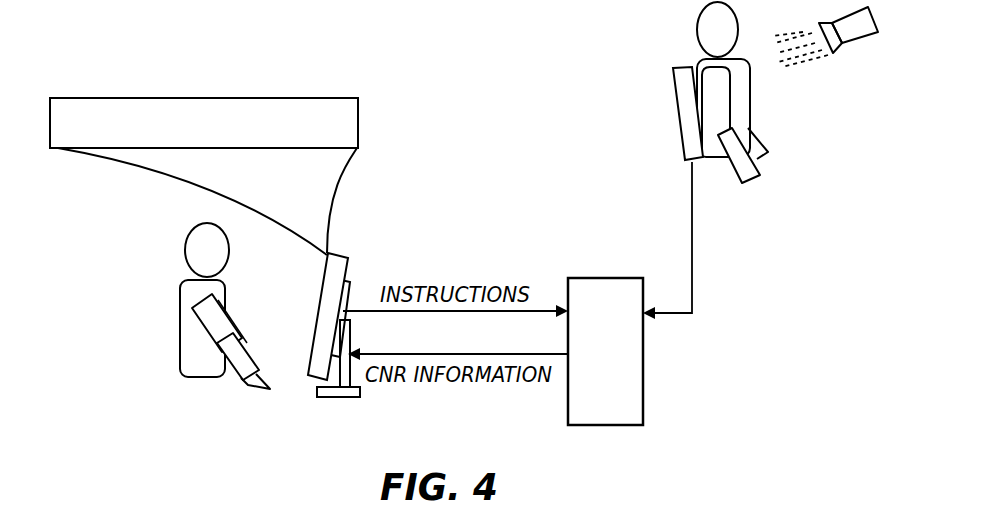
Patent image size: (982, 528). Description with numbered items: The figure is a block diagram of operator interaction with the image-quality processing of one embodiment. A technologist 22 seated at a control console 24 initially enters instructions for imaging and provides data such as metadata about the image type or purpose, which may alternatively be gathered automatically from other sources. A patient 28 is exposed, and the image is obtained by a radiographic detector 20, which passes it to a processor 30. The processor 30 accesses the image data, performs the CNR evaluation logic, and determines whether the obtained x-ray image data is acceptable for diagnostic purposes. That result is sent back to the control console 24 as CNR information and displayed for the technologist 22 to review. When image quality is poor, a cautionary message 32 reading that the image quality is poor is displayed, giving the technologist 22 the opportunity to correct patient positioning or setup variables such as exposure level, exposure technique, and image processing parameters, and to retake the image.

The radiographic detector 20 is at (683, 67).
The technologist 22 is at (196, 226).
The control console 24 is at (338, 253).
The patient 28 is at (753, 115).
The processor 30 is at (643, 396).
The cautionary message 32 is at (277, 98).